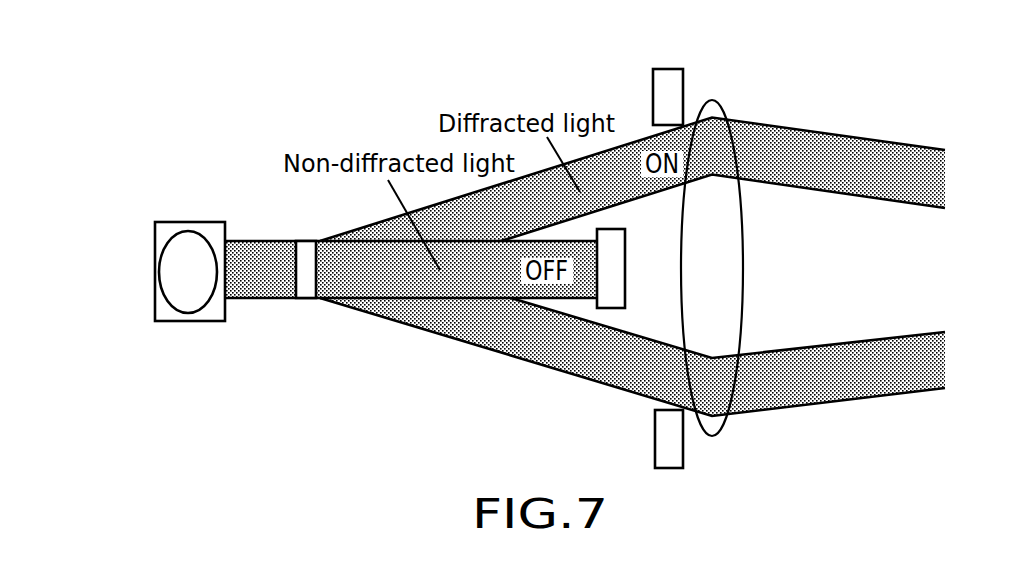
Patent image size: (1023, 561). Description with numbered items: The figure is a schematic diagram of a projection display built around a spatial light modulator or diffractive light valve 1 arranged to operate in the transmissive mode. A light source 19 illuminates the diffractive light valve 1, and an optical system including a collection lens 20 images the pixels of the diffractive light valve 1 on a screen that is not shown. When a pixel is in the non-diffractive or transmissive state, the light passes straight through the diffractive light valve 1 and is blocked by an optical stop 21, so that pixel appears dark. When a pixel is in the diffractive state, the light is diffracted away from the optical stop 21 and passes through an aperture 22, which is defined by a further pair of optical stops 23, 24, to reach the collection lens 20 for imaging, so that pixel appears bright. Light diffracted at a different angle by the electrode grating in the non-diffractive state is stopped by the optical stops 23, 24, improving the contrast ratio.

The diffractive light valve 1 is at (307, 300).
The light source 19 is at (170, 245).
The collection lens 20 is at (730, 268).
The optical stop 21 is at (598, 307).
The aperture 22 is at (653, 102).
The optical stop 23 is at (683, 73).
The optical stop 24 is at (683, 458).